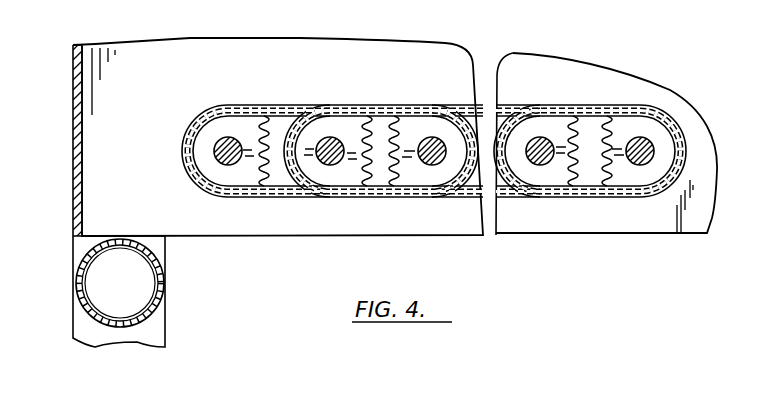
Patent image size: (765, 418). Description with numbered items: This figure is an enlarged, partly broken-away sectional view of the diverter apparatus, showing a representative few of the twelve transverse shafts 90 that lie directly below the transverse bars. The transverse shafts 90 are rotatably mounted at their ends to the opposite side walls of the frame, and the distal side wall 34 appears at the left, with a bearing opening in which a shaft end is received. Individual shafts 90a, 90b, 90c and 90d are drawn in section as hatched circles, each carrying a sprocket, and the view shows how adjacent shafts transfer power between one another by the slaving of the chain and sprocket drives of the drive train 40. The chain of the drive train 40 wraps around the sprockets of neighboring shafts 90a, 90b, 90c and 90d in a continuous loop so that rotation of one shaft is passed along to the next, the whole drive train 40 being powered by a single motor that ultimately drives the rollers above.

The distal side wall 34 is at (137, 65).
The drive train 40 is at (281, 108).
The transverse shafts 90 is at (488, 37).
The transverse shaft 90a is at (215, 140).
The transverse shaft 90b is at (335, 166).
The transverse shaft 90c is at (432, 137).
The transverse shaft 90d is at (645, 136).